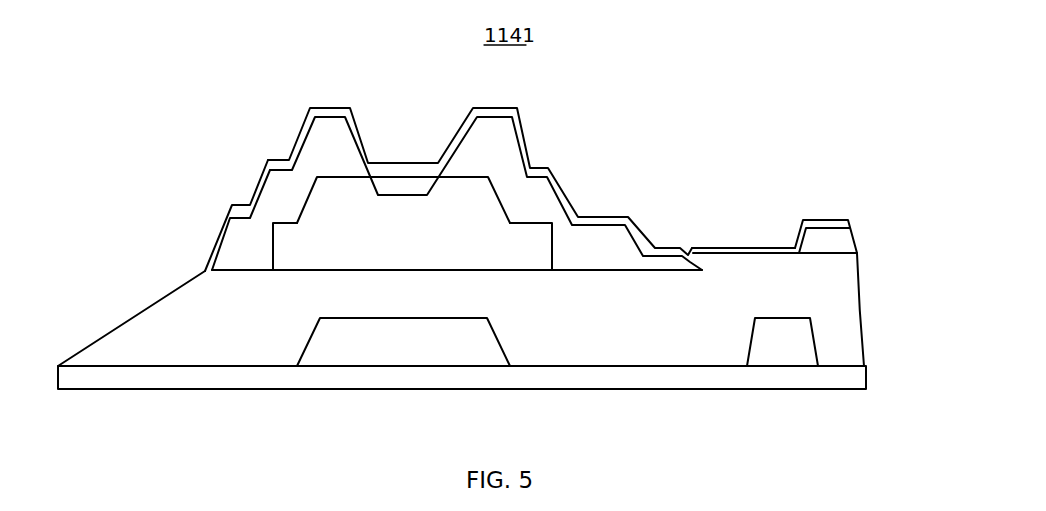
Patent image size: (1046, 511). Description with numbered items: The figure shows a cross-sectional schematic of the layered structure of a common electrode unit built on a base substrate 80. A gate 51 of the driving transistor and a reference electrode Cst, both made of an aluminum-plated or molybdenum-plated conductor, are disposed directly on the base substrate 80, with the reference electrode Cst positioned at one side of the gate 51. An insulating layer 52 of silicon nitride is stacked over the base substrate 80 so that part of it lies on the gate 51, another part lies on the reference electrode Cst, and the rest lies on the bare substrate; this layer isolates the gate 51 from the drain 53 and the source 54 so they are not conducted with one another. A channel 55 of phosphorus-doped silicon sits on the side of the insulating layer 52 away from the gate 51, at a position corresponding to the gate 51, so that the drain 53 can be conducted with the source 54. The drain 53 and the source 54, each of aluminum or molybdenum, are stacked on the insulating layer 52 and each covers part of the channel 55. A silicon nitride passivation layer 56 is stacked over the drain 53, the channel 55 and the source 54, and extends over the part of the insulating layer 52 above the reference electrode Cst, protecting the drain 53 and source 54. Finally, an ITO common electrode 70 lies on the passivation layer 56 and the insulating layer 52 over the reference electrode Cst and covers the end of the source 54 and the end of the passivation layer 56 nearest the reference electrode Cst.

The base substrate 80 is at (408, 389).
The insulating layer 52 is at (148, 358).
The gate 51 is at (322, 353).
The reference electrode Cst is at (783, 357).
The drain 53 is at (238, 237).
The source 54 is at (542, 207).
The channel 55 is at (360, 195).
The passivation layer 56 is at (522, 143).
The common electrode 70 is at (722, 250).